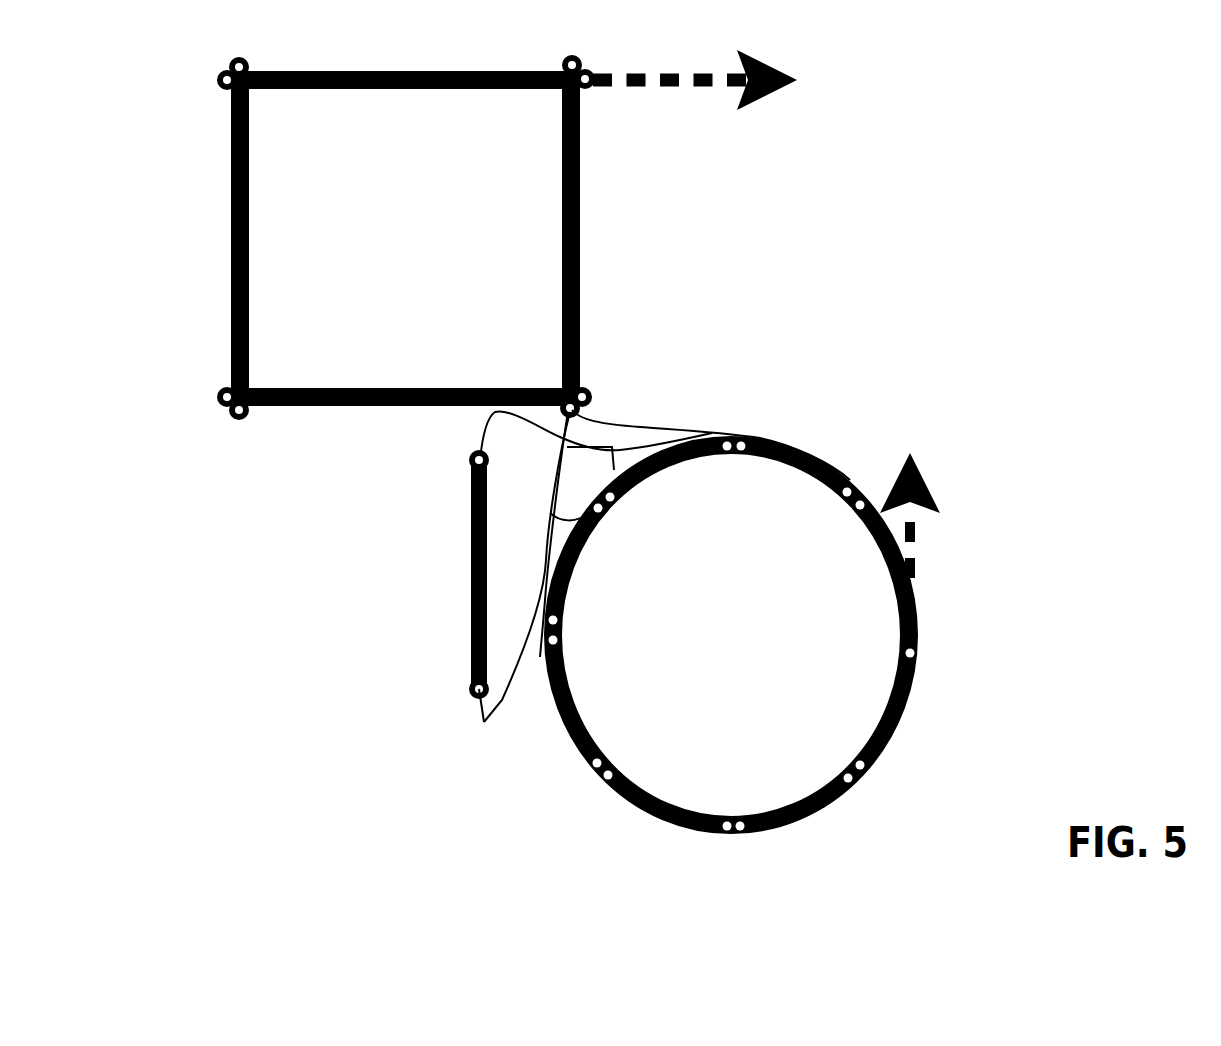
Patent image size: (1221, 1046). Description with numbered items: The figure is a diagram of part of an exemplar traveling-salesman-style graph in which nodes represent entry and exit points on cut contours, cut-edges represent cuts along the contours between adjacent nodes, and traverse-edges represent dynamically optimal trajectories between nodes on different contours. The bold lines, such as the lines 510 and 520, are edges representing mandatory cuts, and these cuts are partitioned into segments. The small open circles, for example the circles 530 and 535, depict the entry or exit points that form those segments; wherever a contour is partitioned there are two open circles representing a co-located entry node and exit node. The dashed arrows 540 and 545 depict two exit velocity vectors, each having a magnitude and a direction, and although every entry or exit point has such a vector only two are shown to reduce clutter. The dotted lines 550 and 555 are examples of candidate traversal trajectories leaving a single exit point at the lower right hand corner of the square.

The bold line edge 510 is at (232, 210).
The bold line edge 520 is at (470, 557).
The open circle 530 is at (583, 388).
The open circle 535 is at (470, 688).
The dashed arrow 540 is at (667, 80).
The dashed arrow 545 is at (913, 528).
The dotted line 550 is at (640, 427).
The dotted line 555 is at (485, 722).